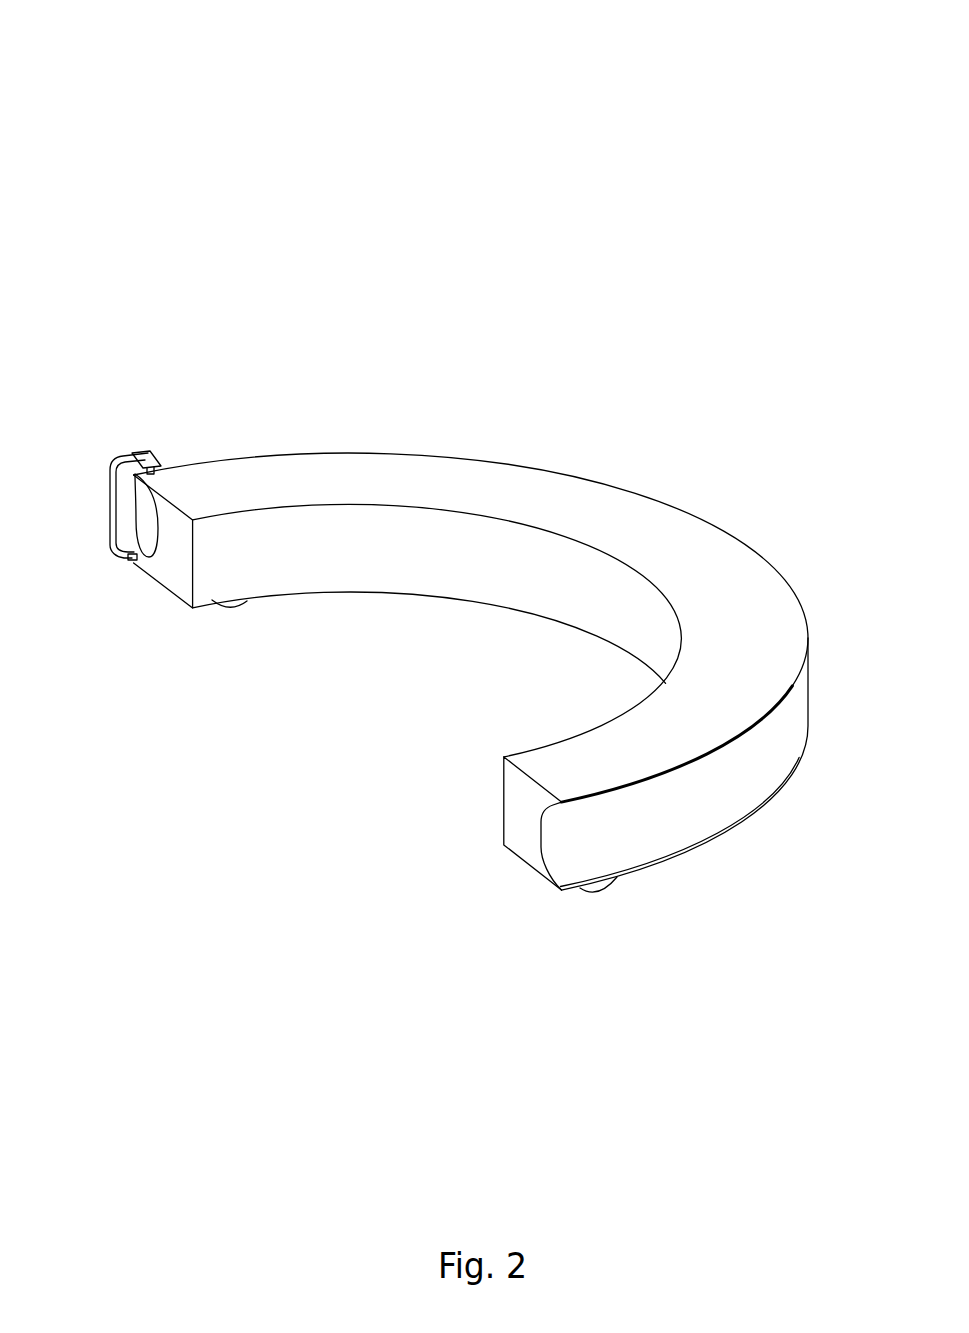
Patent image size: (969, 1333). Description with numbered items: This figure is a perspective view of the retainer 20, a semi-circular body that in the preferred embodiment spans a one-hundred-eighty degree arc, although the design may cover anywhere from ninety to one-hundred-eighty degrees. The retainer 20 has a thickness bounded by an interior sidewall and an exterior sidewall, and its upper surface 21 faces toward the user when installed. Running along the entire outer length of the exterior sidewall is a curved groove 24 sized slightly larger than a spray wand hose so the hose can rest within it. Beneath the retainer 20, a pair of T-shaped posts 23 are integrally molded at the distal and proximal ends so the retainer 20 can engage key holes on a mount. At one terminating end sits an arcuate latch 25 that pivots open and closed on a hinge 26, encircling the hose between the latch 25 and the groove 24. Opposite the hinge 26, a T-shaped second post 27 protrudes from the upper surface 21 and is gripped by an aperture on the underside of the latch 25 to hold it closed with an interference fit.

The retainer 20 is at (140, 120).
The upper surface 21 is at (633, 525).
The posts 23 is at (232, 607).
The groove 24 is at (630, 837).
The latch 25 is at (123, 495).
The hinge 26 is at (133, 560).
The second post 27 is at (162, 470).